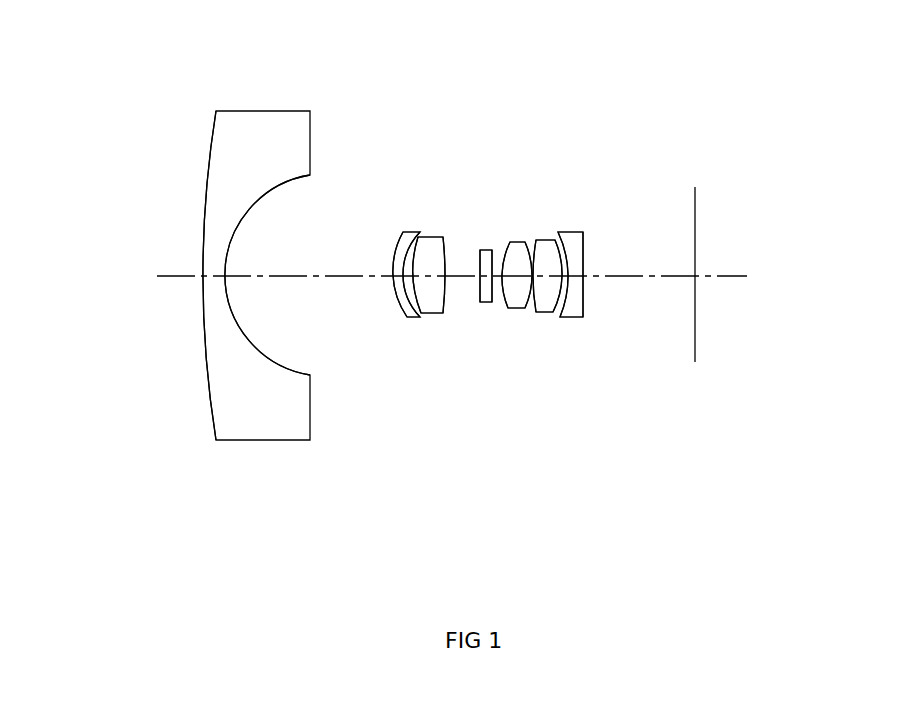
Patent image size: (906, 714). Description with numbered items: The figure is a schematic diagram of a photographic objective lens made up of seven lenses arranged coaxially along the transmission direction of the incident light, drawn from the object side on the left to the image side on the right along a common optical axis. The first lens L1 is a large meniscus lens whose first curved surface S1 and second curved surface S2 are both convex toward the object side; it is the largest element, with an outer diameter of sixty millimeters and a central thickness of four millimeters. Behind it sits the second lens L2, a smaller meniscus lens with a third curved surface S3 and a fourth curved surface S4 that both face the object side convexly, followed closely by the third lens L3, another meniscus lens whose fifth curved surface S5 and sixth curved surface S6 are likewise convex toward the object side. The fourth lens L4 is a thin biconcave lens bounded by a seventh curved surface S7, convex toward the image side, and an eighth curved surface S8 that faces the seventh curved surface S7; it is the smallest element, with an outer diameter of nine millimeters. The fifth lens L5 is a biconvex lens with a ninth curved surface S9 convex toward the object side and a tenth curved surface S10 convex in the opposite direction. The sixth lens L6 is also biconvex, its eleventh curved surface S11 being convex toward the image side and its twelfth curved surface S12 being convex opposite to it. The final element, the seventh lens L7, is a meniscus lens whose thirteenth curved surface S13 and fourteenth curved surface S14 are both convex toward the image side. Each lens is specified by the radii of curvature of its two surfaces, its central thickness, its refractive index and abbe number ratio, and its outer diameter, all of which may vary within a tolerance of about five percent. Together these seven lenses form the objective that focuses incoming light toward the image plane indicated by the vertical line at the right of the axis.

The first lens L1 is at (258, 145).
The second lens L2 is at (402, 240).
The third lens L3 is at (428, 240).
The fourth lens L4 is at (485, 250).
The fifth lens L5 is at (517, 250).
The sixth lens L6 is at (545, 240).
The seventh lens L7 is at (570, 240).
The first curved surface S1 is at (207, 330).
The second curved surface S2 is at (250, 345).
The third curved surface S3 is at (393, 298).
The fourth curved surface S4 is at (400, 305).
The fifth curved surface S5 is at (413, 310).
The sixth curved surface S6 is at (443, 307).
The seventh curved surface S7 is at (477, 303).
The eighth curved surface S8 is at (490, 303).
The ninth curved surface S9 is at (507, 300).
The tenth curved surface S10 is at (537, 303).
The eleventh curved surface S11 is at (550, 303).
The twelfth curved surface S12 is at (563, 303).
The thirteenth curved surface S13 is at (572, 300).
The fourteenth curved surface S14 is at (583, 303).